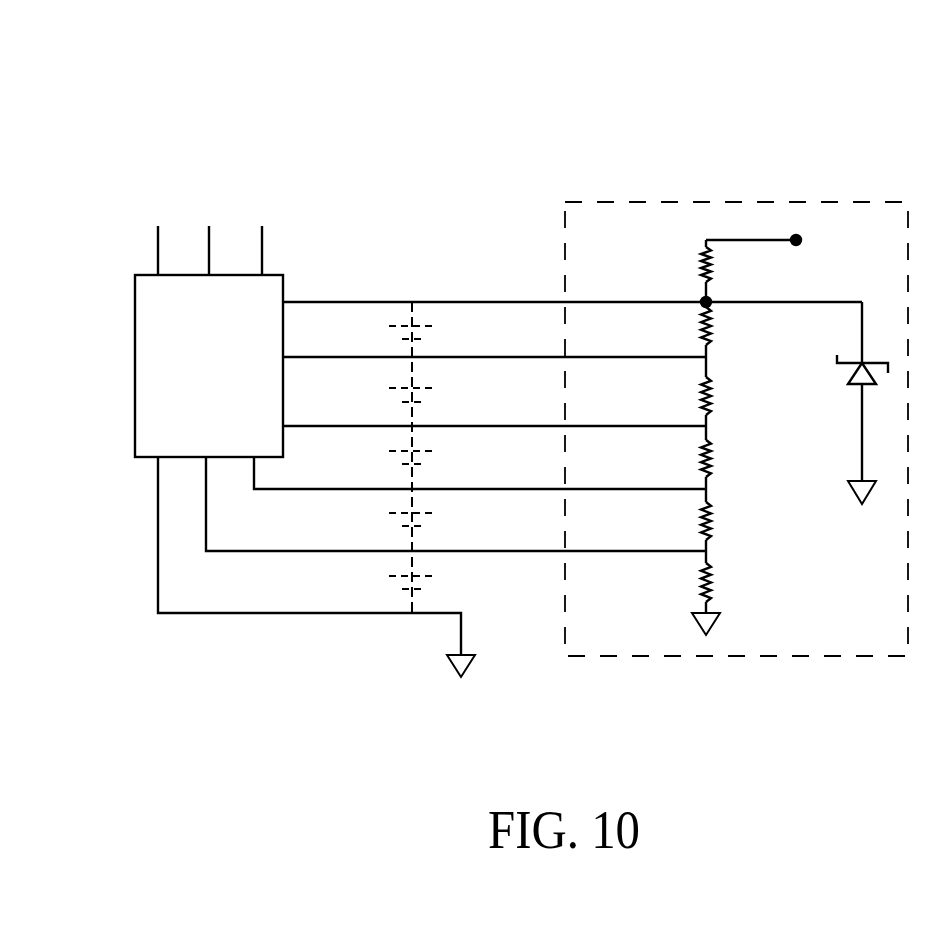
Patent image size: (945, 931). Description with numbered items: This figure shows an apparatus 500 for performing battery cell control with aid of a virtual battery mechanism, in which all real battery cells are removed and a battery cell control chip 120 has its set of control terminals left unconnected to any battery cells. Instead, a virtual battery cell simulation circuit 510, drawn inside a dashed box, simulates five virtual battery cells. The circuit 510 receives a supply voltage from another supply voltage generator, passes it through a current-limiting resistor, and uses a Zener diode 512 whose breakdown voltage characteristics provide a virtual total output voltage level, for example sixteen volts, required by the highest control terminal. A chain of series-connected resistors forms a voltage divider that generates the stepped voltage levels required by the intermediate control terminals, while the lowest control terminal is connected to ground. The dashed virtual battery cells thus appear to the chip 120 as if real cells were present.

The apparatus 500 is at (310, 70).
The battery cell control chip 120 is at (135, 305).
The virtual battery cell simulation circuit 510 is at (859, 202).
The Zener diode 512 is at (840, 377).